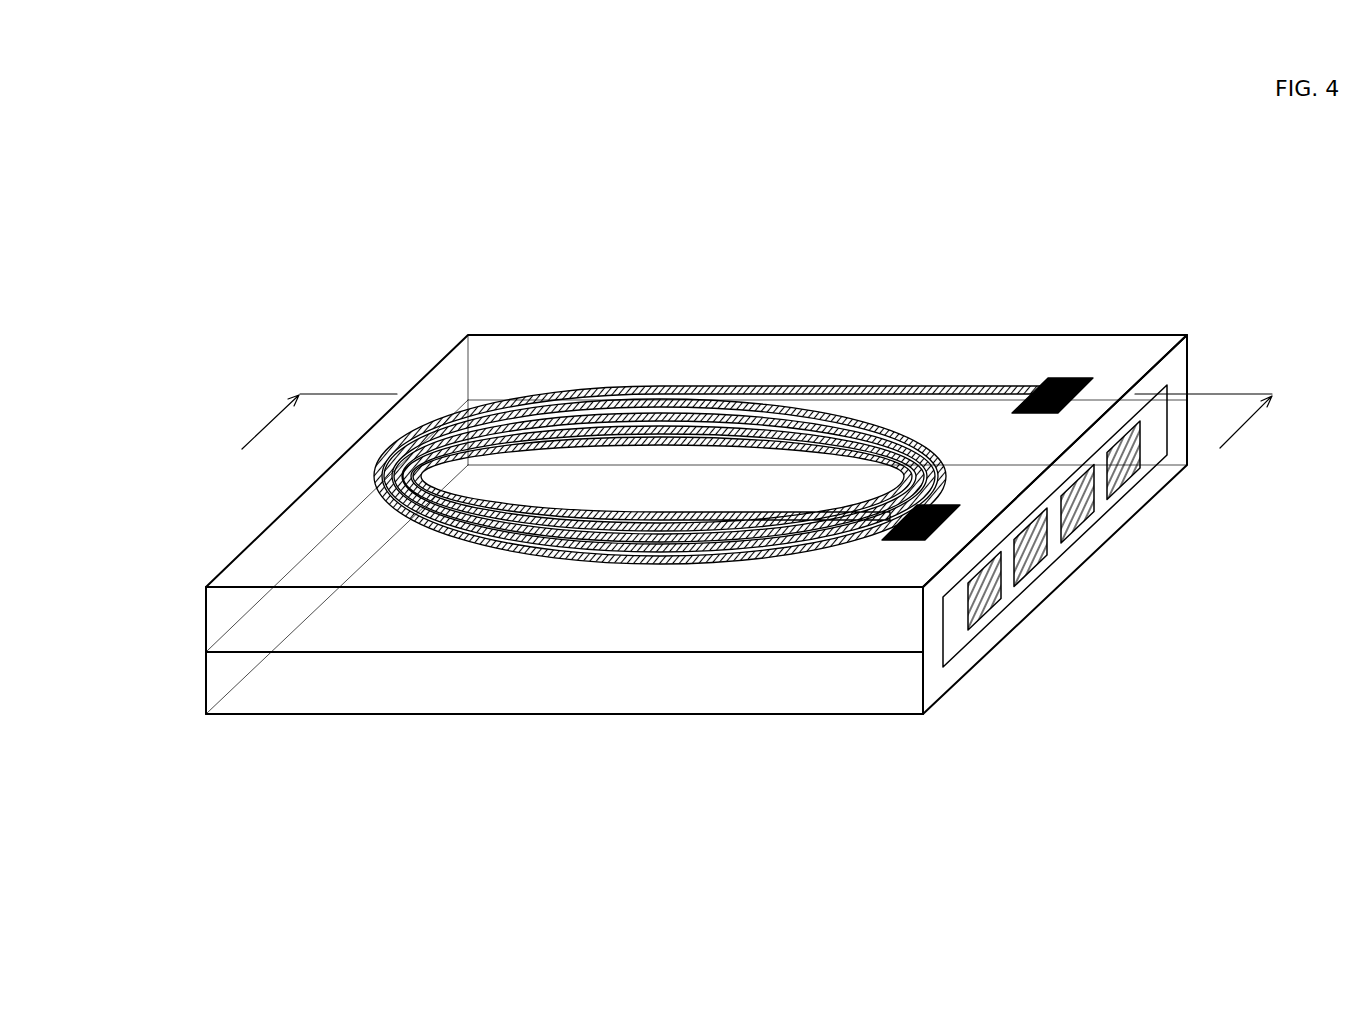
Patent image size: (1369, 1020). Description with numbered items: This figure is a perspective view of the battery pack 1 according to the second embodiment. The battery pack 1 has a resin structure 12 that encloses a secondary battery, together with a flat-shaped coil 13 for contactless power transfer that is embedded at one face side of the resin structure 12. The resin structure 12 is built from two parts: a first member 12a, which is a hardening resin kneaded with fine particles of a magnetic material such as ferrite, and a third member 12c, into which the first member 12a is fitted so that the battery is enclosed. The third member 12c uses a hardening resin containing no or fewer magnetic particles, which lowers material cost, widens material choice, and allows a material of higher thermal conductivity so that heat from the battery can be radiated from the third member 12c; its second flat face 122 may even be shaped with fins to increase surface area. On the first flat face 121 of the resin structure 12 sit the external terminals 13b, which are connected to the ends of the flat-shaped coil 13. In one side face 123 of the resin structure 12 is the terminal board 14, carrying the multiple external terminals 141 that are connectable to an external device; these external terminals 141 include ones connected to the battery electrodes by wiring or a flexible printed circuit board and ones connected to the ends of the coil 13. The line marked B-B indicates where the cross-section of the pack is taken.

The battery pack 1 is at (943, 265).
The resin structure 12 is at (108, 604).
The first member 12a is at (217, 616).
The third member 12c is at (217, 679).
The first flat face 121 is at (577, 352).
The second flat face 122 is at (714, 716).
The side face 123 is at (1178, 368).
The flat-shaped coil 13 is at (830, 386).
The external terminals 13b is at (947, 505).
The terminal board 14 is at (956, 640).
The external terminals 141 is at (988, 601).